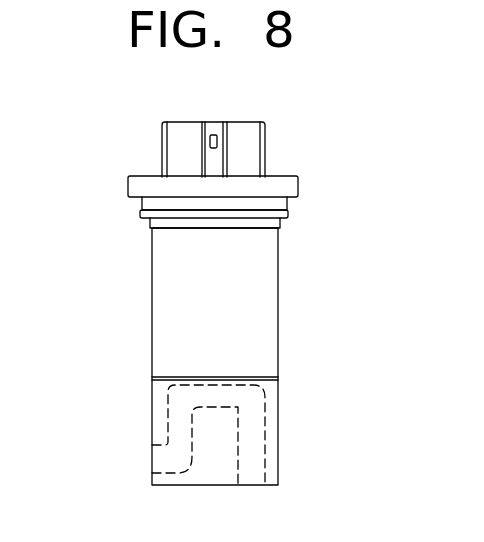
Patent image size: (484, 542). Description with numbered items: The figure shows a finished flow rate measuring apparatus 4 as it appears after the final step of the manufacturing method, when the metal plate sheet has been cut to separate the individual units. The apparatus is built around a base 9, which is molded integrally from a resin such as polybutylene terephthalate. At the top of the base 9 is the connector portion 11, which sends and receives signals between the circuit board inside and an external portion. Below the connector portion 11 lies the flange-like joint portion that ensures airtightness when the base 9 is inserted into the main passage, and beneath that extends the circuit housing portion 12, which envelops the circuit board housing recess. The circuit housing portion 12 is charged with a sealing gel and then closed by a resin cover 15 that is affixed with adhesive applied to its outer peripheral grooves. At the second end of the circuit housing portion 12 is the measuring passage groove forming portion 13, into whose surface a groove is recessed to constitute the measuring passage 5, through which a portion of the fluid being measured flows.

The flow rate measuring apparatus 4 is at (75, 98).
The measuring passage 5 is at (280, 430).
The base 9 is at (116, 176).
The connector portion 11 is at (270, 145).
The circuit housing portion 12 is at (298, 200).
The measuring passage groove forming portion 13 is at (273, 398).
The cover 15 is at (260, 297).